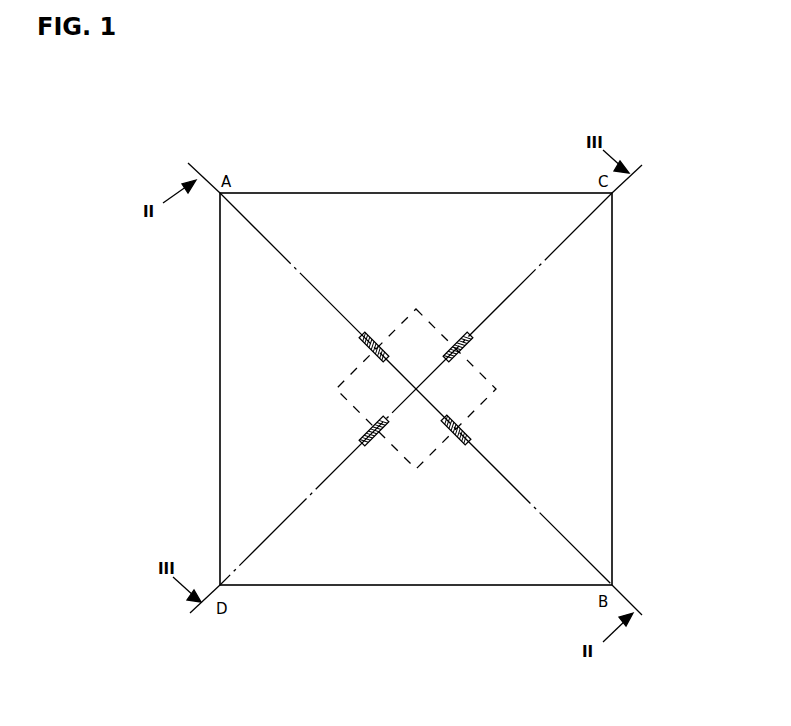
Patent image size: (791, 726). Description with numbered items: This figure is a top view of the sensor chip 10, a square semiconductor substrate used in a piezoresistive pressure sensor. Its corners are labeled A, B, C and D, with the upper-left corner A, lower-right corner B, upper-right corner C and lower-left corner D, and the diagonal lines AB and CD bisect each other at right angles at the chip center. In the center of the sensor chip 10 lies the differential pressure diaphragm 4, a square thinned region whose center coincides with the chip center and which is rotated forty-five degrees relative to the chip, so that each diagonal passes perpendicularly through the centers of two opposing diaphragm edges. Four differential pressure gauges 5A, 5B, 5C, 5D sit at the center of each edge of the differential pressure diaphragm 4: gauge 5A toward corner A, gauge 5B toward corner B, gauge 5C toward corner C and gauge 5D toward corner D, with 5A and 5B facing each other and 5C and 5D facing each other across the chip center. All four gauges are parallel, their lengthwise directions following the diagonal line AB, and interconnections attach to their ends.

The sensor chip 10 is at (608, 248).
The differential pressure diaphragm 4 is at (422, 313).
The differential pressure gauge 5A is at (372, 341).
The differential pressure gauge 5B is at (460, 425).
The differential pressure gauge 5C is at (464, 345).
The differential pressure gauge 5D is at (373, 426).